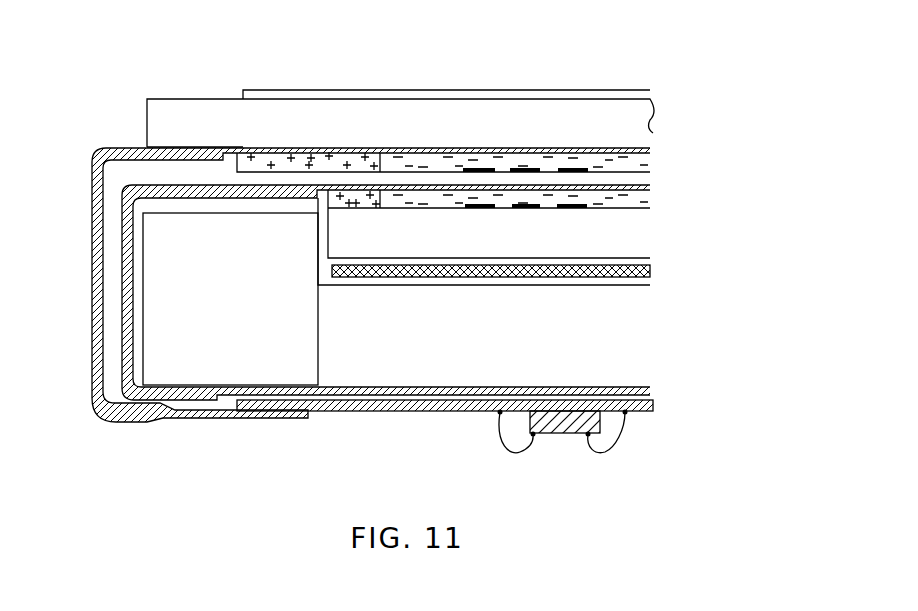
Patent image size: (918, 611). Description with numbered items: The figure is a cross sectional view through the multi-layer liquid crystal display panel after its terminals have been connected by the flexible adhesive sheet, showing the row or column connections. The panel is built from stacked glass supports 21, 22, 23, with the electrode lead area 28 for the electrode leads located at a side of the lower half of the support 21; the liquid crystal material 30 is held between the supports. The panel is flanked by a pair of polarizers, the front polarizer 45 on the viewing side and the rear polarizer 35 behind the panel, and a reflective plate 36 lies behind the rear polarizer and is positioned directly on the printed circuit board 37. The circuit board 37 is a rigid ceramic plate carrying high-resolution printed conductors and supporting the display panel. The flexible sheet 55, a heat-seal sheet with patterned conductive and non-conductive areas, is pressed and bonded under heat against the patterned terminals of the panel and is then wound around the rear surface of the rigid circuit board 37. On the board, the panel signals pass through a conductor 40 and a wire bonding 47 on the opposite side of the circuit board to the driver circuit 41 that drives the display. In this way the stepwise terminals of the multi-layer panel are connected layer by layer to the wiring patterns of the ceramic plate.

The support 21 is at (618, 118).
The support 22 is at (638, 183).
The support 23 is at (618, 243).
The electrode lead area 28 is at (197, 146).
The electro-optic material 30 is at (358, 203).
The polarizer 35 is at (647, 268).
The reflective plate 36 is at (648, 287).
The printed circuit board 37 is at (230, 299).
The conductor 40 is at (395, 411).
The driver circuit 41 is at (560, 433).
The polarizer 45 is at (555, 98).
The wire bonding 47 is at (616, 456).
The flexible sheet 55 is at (122, 305).